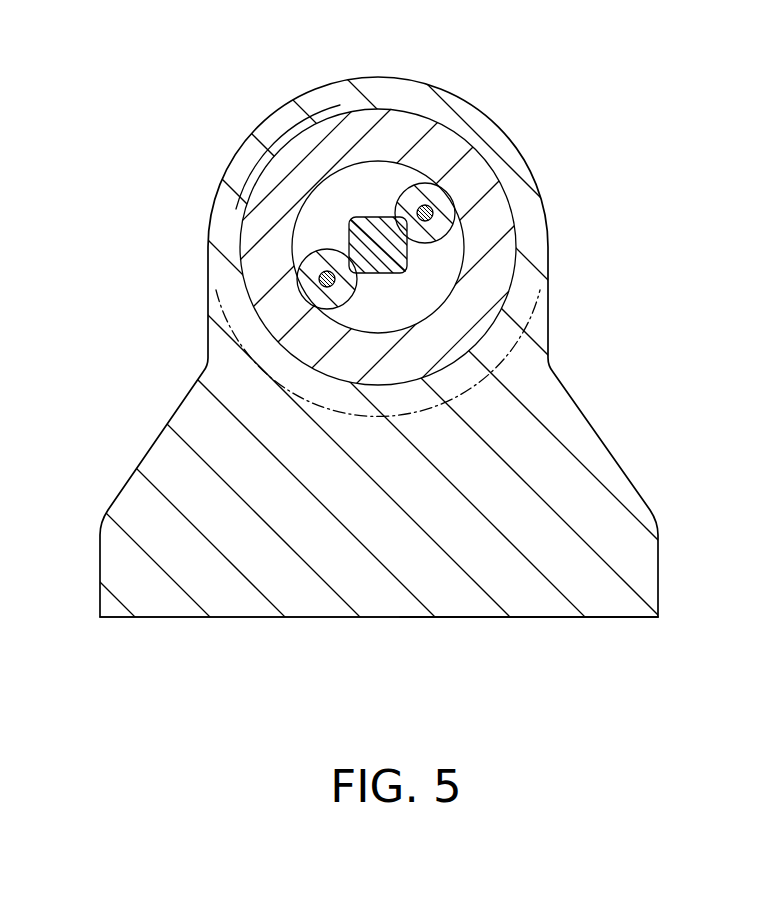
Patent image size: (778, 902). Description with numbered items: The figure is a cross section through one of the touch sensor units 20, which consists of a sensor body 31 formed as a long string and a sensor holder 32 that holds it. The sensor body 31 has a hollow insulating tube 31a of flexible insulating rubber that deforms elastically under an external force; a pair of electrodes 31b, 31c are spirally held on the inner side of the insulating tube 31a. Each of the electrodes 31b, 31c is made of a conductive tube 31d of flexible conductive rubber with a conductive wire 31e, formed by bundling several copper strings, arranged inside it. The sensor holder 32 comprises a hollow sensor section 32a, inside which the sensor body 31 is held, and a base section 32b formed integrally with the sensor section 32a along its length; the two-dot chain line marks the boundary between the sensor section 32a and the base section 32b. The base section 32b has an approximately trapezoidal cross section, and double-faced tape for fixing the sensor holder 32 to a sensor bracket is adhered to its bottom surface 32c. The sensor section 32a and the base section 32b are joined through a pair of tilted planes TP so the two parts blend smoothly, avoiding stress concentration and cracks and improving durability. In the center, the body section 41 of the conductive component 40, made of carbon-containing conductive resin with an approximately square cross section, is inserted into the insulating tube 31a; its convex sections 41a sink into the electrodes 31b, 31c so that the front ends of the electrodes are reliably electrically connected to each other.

The touch sensor unit 20 is at (236, 90).
The sensor body 31 is at (236, 205).
The insulating tube 31a is at (383, 108).
The electrode 31b is at (458, 190).
The electrode 31c is at (302, 300).
The conductive tube 31d is at (462, 222).
The conductive wire 31e is at (493, 138).
The sensor holder 32 is at (156, 427).
The sensor section 32a is at (498, 125).
The base section 32b is at (462, 520).
The bottom surface 32c is at (530, 620).
The conductive component 40 is at (396, 283).
The body section 41 is at (297, 243).
The convex section 41a is at (405, 195).
The tilted plane TP is at (185, 392).